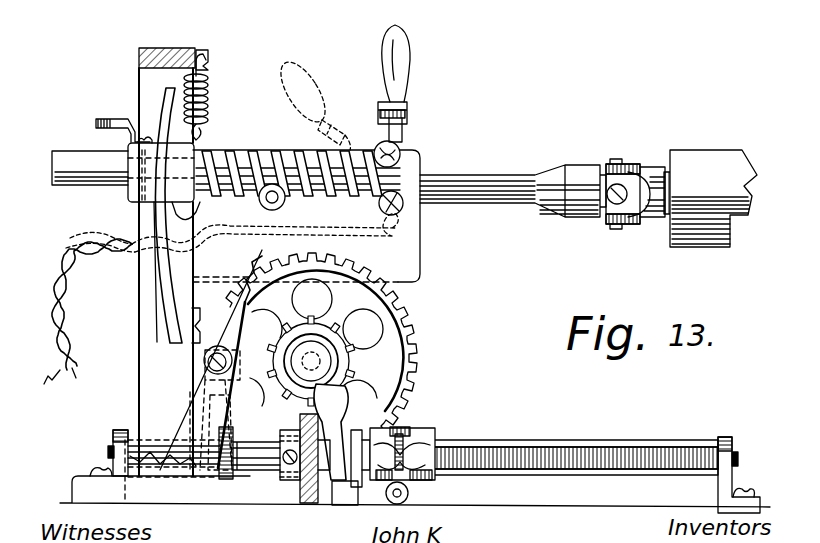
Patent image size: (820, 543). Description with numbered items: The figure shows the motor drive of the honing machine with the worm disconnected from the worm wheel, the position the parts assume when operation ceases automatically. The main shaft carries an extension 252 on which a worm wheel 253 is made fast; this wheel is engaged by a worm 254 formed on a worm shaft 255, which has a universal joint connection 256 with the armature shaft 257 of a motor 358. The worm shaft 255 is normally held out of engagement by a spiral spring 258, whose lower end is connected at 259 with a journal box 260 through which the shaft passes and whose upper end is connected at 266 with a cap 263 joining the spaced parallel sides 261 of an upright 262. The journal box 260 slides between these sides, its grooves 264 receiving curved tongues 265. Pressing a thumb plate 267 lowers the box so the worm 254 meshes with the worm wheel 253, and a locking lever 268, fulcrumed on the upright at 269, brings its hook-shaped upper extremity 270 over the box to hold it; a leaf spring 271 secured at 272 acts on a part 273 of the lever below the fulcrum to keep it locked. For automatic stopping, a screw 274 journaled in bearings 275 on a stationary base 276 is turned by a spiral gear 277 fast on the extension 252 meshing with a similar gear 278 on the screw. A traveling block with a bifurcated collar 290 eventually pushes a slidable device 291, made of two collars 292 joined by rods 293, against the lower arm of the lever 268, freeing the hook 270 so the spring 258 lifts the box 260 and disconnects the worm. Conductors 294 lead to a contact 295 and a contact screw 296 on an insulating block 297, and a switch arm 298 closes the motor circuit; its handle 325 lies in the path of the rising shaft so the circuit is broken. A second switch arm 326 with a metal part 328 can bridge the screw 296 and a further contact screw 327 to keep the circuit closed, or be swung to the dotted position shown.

The extension 252 is at (322, 362).
The worm wheel 253 is at (400, 305).
The worm 254 is at (255, 156).
The worm shaft 255 is at (470, 168).
The universal joint connection 256 is at (633, 164).
The armature shaft 257 is at (667, 170).
The spiral spring 258 is at (208, 96).
The spring connection 259 is at (290, 52).
The journal box 260 is at (136, 182).
The spaced parallel sides 261 is at (145, 98).
The upright 262 is at (125, 272).
The cap 263 is at (166, 48).
The grooves 264 is at (160, 172).
The tongues 265 is at (255, 272).
The spring connection 266 is at (204, 50).
The thumb plate 267 is at (108, 119).
The locking lever 268 is at (295, 369).
The fulcrum 269 is at (204, 364).
The hook-shaped upper extremity 270 is at (228, 362).
The leaf spring 271 is at (190, 400).
The leaf spring attachment 272 is at (170, 320).
The lever part 273 is at (220, 482).
The screw 274 is at (662, 444).
The bearings 275 is at (118, 430).
The stationary base 276 is at (588, 507).
The spiral gear 277 is at (342, 420).
The spiral gear 278 is at (318, 500).
The bifurcated collar 290 is at (430, 432).
The slidable device 291 is at (345, 444).
The collars 292 is at (430, 430).
The rods 293 is at (282, 480).
The conductors 294 is at (76, 280).
The contact 295 is at (260, 197).
The contact screw 296 is at (400, 205).
The insulating block 297 is at (405, 264).
The switch arm 298 is at (366, 144).
The handle 325 is at (407, 144).
The switch arm 326 is at (404, 82).
The contact screw 327 is at (395, 172).
The metal part 328 is at (398, 152).
The motor 358 is at (718, 150).